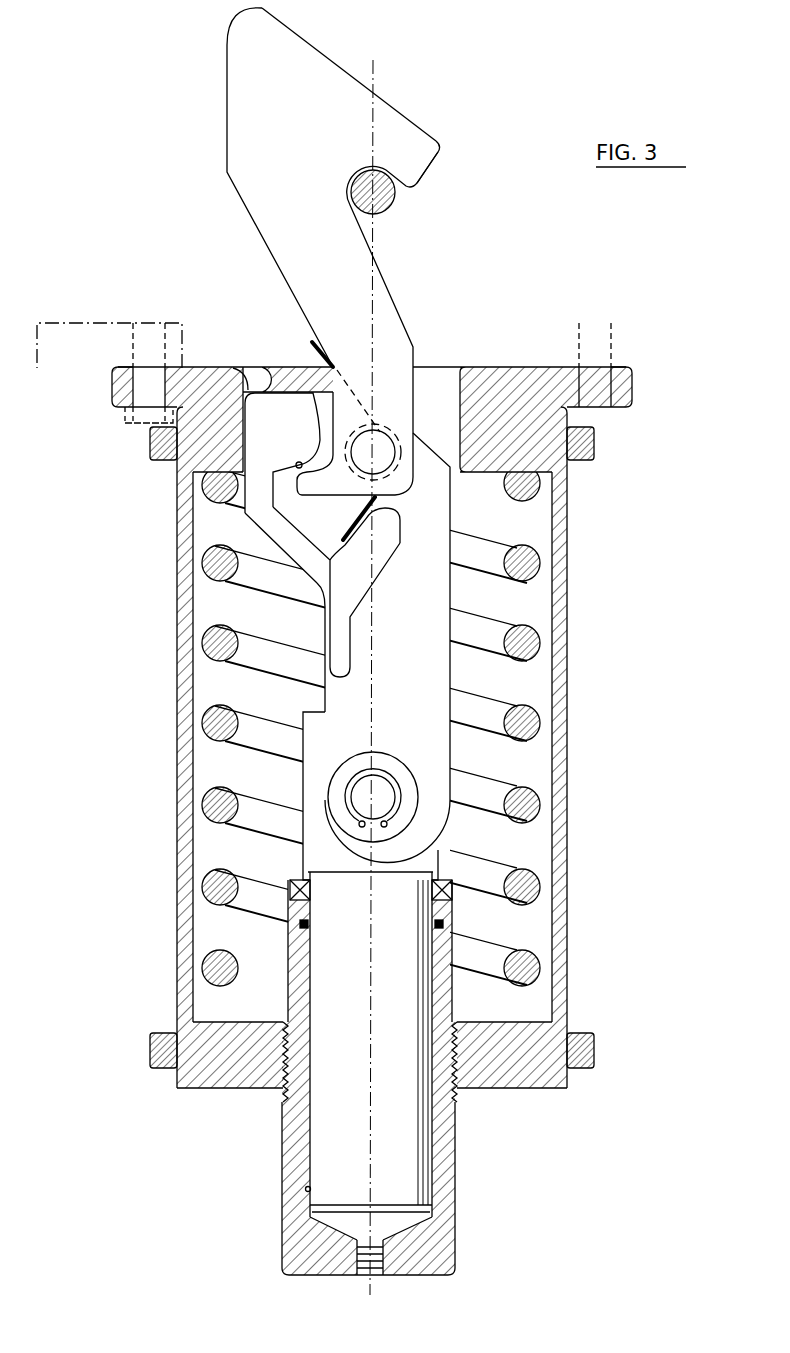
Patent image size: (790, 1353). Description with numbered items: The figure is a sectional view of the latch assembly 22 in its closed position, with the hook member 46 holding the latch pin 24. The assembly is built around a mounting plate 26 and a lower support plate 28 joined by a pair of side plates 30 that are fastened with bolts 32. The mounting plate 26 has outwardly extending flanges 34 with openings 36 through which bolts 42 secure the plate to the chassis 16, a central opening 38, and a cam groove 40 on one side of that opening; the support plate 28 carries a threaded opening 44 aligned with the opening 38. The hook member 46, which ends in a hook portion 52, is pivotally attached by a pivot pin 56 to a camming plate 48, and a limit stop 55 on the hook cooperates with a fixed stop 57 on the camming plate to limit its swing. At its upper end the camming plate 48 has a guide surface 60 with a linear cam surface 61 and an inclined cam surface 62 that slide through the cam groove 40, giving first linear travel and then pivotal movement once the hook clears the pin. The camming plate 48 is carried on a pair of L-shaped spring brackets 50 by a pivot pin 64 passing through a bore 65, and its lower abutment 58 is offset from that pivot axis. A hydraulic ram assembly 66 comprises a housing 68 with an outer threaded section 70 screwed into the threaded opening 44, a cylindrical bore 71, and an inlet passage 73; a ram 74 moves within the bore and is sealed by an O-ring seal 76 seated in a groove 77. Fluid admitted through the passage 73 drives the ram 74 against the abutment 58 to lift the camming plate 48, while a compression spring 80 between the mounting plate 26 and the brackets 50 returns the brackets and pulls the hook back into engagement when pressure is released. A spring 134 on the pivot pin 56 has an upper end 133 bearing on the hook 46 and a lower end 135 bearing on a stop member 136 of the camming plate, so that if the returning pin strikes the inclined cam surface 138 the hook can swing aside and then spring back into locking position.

The chassis 16 is at (78, 322).
The latch assembly 22 is at (543, 364).
The latch pin 24 is at (390, 200).
The mounting plate 26 is at (505, 367).
The support plate 28 is at (520, 1088).
The side plates 30 is at (177, 592).
The bolts 32 is at (150, 447).
The flanges 34 is at (112, 388).
The openings 36 is at (165, 368).
The central opening 38 is at (460, 390).
The cam groove 40 is at (247, 390).
The mounting bolt 42 is at (128, 418).
The threaded opening 44 is at (282, 1018).
The hook member 46 is at (268, 260).
The camming plate 48 is at (452, 590).
The spring brackets 50 is at (303, 780).
The hook portion 52 is at (426, 180).
The limit stop 55 is at (315, 490).
The pivot pin 56 is at (380, 432).
The fixed stop 57 is at (296, 462).
The abutment 58 is at (378, 872).
The guide surface 60 is at (258, 390).
The linear cam surface 61 is at (238, 497).
The inclined cam surface 62 is at (258, 528).
The pivot pin 64 is at (373, 790).
The bore 65 is at (400, 775).
The hydraulic ram assembly 66 is at (272, 1152).
The housing 68 is at (458, 1135).
The outer threaded section 70 is at (458, 1022).
The cylindrical bore 71 is at (305, 1190).
The inlet passage 73 is at (378, 1275).
The ram 74 is at (430, 1178).
The O-ring seal 76 is at (292, 933).
The groove 77 is at (445, 928).
The compression spring 80 is at (530, 714).
The upper end 133 is at (318, 350).
The springs 134 is at (364, 386).
The lower end 135 is at (345, 530).
The stop member 136 is at (388, 560).
The inclined cam surface 138 is at (330, 50).